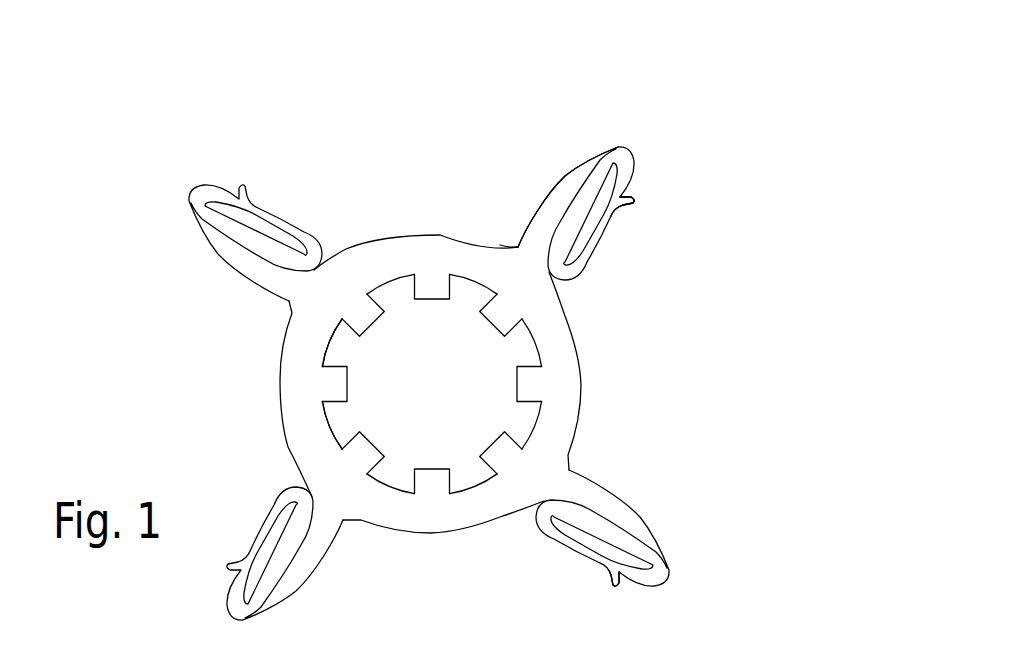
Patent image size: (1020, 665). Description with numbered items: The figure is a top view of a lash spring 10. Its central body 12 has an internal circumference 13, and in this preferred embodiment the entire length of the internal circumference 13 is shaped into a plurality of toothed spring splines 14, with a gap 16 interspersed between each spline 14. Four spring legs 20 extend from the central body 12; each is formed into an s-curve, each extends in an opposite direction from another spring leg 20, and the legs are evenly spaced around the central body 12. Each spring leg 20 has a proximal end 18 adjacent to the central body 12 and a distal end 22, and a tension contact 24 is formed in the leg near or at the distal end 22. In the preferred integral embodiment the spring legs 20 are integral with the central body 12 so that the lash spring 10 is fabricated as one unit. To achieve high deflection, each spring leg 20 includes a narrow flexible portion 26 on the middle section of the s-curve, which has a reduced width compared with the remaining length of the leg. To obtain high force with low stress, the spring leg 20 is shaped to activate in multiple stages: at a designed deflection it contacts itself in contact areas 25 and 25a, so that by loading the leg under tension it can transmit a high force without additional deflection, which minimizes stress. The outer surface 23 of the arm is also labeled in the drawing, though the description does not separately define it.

The lash spring 10 is at (705, 121).
The central body 12 is at (563, 372).
The internal circumference 13 is at (475, 281).
The toothed shape spring spline 14 is at (433, 287).
The gap 16 is at (340, 427).
The proximal end 18 is at (520, 246).
The spring leg 20 is at (611, 132).
The distal end 22 is at (644, 214).
The outer surface of arm 23 is at (563, 173).
The tension contact 24 is at (612, 216).
The contact area 25 is at (552, 500).
The contact area 25a is at (617, 580).
The narrow flexible portion 26 is at (633, 195).